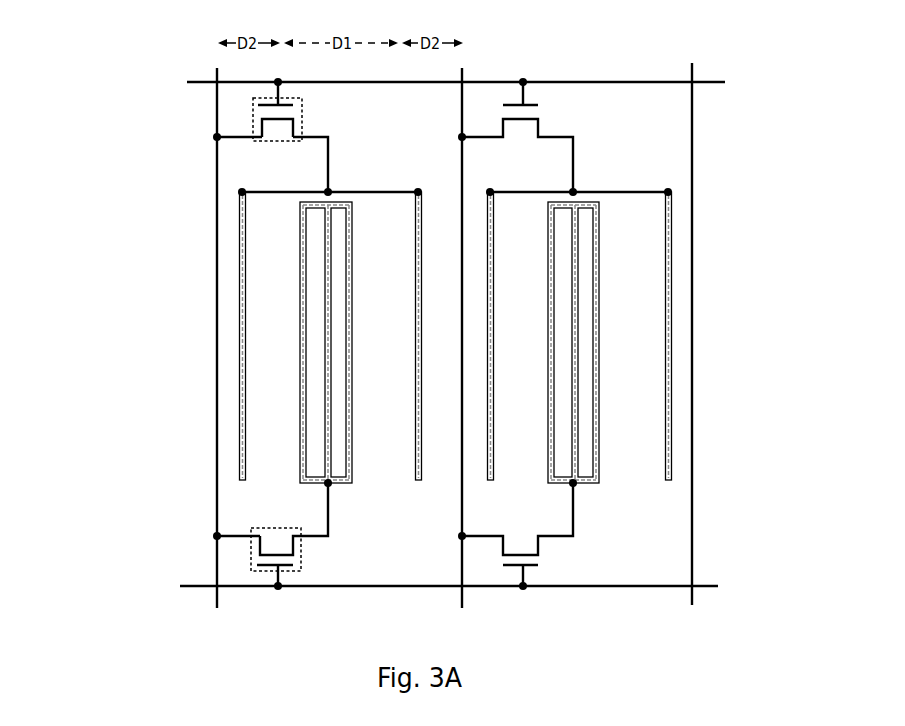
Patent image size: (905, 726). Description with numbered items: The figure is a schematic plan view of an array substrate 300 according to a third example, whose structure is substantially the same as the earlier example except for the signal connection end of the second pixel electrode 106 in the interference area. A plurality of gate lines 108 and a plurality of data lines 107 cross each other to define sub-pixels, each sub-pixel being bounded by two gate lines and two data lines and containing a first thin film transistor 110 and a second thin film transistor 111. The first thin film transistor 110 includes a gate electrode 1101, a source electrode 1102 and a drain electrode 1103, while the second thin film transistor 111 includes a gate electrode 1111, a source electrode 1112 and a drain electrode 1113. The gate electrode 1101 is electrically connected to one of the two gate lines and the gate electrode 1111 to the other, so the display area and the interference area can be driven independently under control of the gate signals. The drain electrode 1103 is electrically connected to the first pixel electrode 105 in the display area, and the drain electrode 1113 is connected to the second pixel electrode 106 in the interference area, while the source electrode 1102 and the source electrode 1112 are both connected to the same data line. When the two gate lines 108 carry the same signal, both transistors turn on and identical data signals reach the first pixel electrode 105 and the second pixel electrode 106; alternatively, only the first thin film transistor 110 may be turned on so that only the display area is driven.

The array substrate 300 is at (152, 58).
The gate line 108 is at (543, 82).
The data line 107 is at (217, 281).
The second pixel electrode 106 is at (240, 413).
The first pixel electrode 105 is at (352, 483).
The second thin film transistor 111 is at (253, 115).
The gate electrode 1111 is at (288, 104).
The source electrode 1112 is at (238, 139).
The drain electrode 1113 is at (293, 128).
The first thin film transistor 110 is at (251, 568).
The gate electrode 1101 is at (285, 567).
The source electrode 1102 is at (260, 544).
The drain electrode 1103 is at (293, 545).